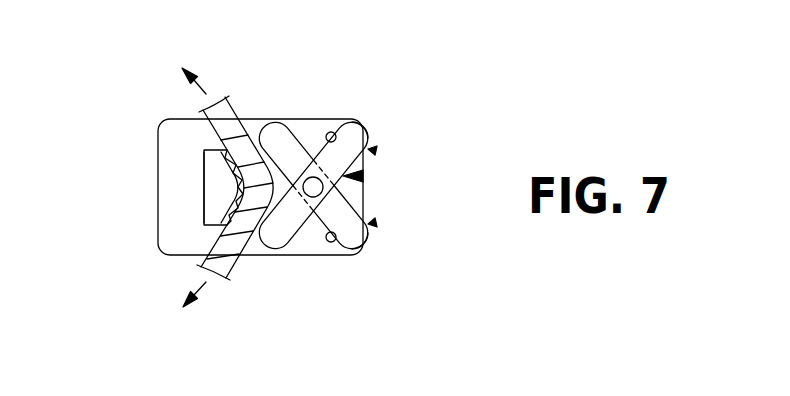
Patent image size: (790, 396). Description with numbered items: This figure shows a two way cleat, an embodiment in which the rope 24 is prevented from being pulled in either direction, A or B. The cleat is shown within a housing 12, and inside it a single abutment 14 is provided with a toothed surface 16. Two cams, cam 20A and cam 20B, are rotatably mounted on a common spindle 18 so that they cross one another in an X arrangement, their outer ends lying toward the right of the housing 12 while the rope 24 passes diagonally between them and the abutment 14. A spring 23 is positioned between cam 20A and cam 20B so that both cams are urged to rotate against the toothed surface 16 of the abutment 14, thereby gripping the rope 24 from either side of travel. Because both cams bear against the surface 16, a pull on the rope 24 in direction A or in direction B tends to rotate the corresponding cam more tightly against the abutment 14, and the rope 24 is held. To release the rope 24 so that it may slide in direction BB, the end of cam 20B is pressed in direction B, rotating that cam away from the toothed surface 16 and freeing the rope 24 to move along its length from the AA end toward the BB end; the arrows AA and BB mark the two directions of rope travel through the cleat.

The housing 12 is at (158, 233).
The abutment 14 is at (203, 183).
The toothed surface 16 is at (203, 168).
The spindle 18 is at (292, 165).
The cam 20A is at (368, 138).
The cam 20B is at (368, 233).
The spring 23 is at (365, 176).
The rope 24 is at (220, 108).
The direction A is at (372, 150).
The direction B is at (372, 223).
The direction AA is at (186, 70).
The direction BB is at (186, 307).